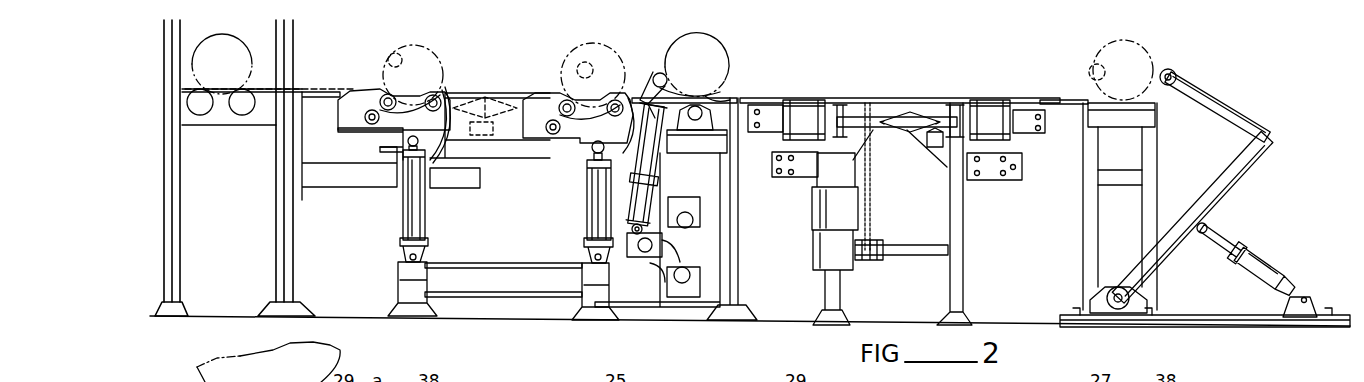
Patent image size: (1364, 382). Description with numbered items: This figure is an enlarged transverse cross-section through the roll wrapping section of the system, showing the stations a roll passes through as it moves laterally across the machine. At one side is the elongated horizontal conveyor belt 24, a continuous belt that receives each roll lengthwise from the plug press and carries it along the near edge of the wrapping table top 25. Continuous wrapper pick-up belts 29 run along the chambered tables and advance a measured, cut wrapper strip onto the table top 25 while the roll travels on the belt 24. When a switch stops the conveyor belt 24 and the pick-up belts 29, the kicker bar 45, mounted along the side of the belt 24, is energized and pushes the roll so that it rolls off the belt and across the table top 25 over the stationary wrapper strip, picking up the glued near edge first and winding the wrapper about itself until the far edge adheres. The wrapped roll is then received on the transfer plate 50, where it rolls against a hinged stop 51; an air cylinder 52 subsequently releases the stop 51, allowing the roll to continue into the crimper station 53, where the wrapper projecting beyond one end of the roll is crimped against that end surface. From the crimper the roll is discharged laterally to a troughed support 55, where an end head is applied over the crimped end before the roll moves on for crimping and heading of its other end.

The conveyor belt 24 is at (1155, 113).
The wrapping table top 25 is at (909, 92).
The wrapper pick-up belts 29 is at (812, 98).
The kicker bar 45 is at (1212, 192).
The transfer table or plate 50 is at (713, 93).
The hinged stop 51 is at (660, 73).
The air cylinder 52 is at (660, 182).
The crimper station 53 is at (565, 87).
The troughed support 55 is at (430, 92).